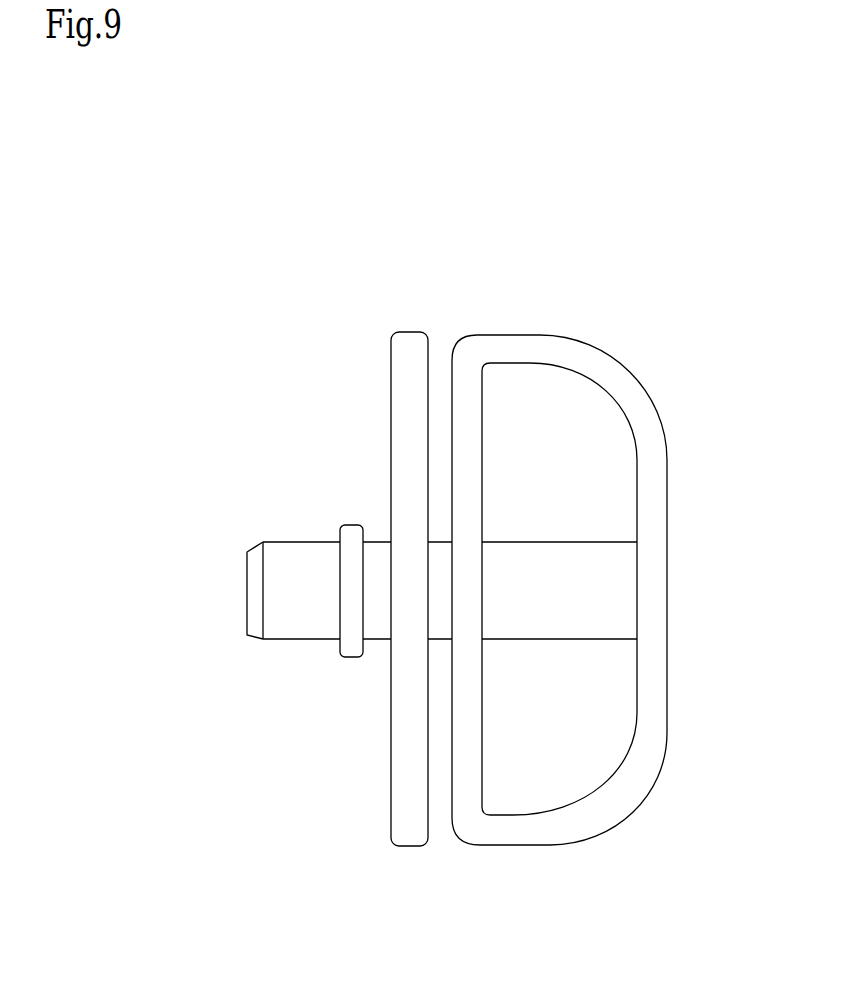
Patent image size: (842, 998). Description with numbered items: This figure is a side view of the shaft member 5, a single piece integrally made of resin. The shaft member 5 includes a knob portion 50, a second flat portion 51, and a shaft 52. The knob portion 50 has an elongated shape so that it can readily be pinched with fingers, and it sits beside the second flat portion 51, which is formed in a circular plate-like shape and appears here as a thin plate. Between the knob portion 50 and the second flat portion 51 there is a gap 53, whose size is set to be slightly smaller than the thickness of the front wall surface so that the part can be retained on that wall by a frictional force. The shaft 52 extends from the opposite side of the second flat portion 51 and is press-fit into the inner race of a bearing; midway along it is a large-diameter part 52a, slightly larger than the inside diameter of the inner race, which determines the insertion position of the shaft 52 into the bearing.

The shaft member 5 is at (403, 258).
The knob portion 50 is at (587, 350).
The second flat portion 51 is at (388, 372).
The shaft 52 is at (292, 645).
The large-diameter part 52a is at (348, 528).
The gap 53 is at (446, 832).